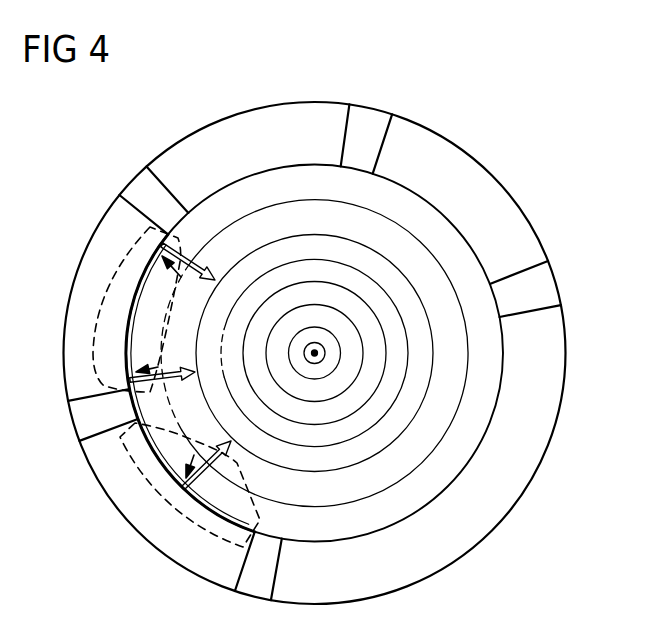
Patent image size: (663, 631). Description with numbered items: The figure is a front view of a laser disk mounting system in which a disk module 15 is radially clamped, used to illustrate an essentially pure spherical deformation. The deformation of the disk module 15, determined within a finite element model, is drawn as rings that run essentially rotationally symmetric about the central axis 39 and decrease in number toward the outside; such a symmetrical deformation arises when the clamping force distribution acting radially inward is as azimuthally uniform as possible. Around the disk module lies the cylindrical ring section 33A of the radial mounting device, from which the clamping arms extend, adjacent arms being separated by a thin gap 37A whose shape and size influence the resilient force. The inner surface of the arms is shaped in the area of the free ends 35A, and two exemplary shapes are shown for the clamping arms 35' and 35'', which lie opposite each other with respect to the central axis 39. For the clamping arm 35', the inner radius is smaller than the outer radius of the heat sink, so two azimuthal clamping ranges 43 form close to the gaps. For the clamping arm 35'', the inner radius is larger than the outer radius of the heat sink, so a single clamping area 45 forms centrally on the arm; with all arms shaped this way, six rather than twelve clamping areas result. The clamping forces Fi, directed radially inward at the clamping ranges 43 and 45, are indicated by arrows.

The disk module 15 is at (449, 248).
The cylindrical ring section 33A is at (365, 127).
The free ends 35A is at (472, 156).
The gap 37A is at (152, 201).
The clamping arm 35' is at (113, 281).
The clamping arm 35'' is at (142, 485).
The central axis 39 is at (318, 353).
The clamping ranges 43 is at (178, 268).
The clamping area 45 is at (191, 455).
The clamping forces Fi is at (203, 267).